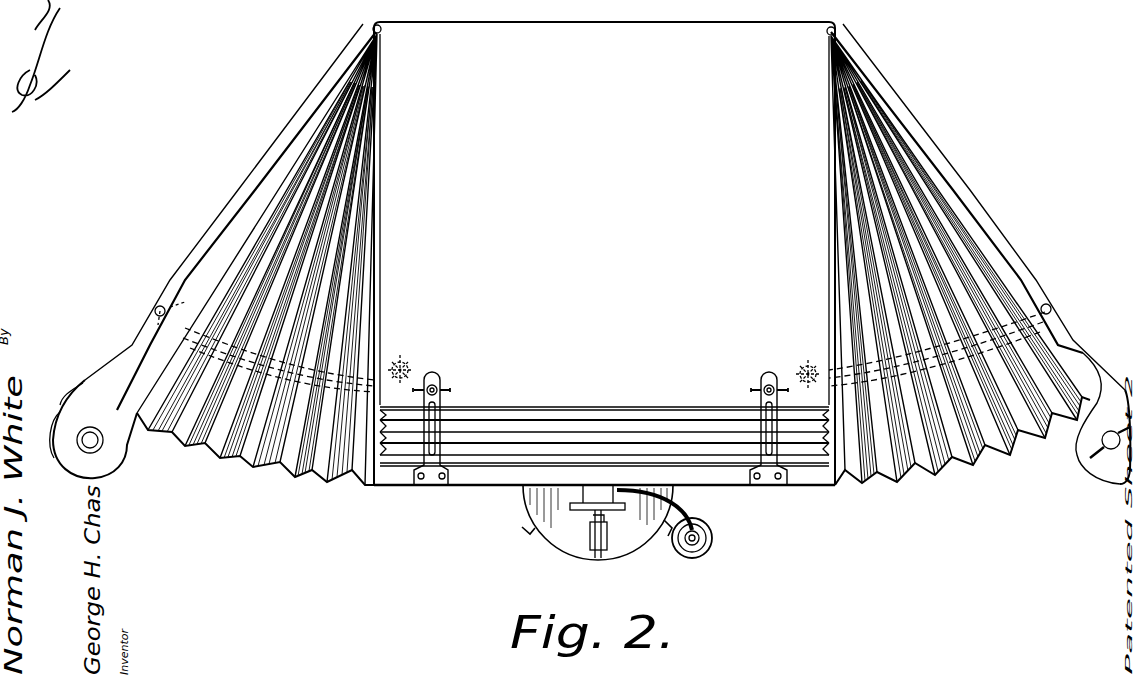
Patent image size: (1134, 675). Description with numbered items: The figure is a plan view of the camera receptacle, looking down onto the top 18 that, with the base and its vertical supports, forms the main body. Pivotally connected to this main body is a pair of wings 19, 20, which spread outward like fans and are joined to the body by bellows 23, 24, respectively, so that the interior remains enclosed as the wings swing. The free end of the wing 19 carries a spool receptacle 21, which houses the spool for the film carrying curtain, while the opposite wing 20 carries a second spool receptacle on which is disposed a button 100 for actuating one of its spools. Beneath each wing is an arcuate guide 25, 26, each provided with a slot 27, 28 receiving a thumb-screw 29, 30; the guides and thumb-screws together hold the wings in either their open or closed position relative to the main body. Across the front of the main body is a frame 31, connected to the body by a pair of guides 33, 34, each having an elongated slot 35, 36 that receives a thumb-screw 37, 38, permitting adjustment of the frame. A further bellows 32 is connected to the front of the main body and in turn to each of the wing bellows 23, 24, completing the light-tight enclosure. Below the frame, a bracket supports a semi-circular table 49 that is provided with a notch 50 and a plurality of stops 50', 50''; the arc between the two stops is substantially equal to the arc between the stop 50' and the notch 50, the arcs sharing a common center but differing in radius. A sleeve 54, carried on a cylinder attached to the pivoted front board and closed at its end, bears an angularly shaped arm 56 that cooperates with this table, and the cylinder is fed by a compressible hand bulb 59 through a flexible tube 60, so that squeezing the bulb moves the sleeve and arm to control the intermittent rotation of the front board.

The top 18 is at (604, 253).
The wing 19 is at (238, 191).
The wing 20 is at (995, 220).
The spool receptacle 21 is at (70, 468).
The bellows 23 is at (255, 462).
The bellows 24 is at (975, 465).
The guide 25 is at (388, 350).
The guide 26 is at (812, 362).
The slot 27 is at (410, 360).
The slot 28 is at (812, 372).
The thumb-screw 29 is at (436, 380).
The thumb-screw 30 is at (764, 380).
The frame 31 is at (492, 487).
The bellows 32 is at (505, 418).
The guide 33 is at (430, 475).
The guide 34 is at (764, 487).
The elongated slot 35 is at (430, 430).
The elongated slot 36 is at (772, 448).
The thumb-screw 37 is at (450, 388).
The thumb-screw 38 is at (751, 390).
The semi-circular table 49 is at (570, 525).
The notch 50 is at (687, 564).
The stop 50' is at (593, 537).
The stop 50'' is at (512, 542).
The sleeve 54 is at (610, 545).
The angularly shaped arm 56 is at (602, 556).
The compressible hand bulb 59 is at (692, 560).
The flexible tube 60 is at (690, 508).
The button 100 is at (1092, 452).